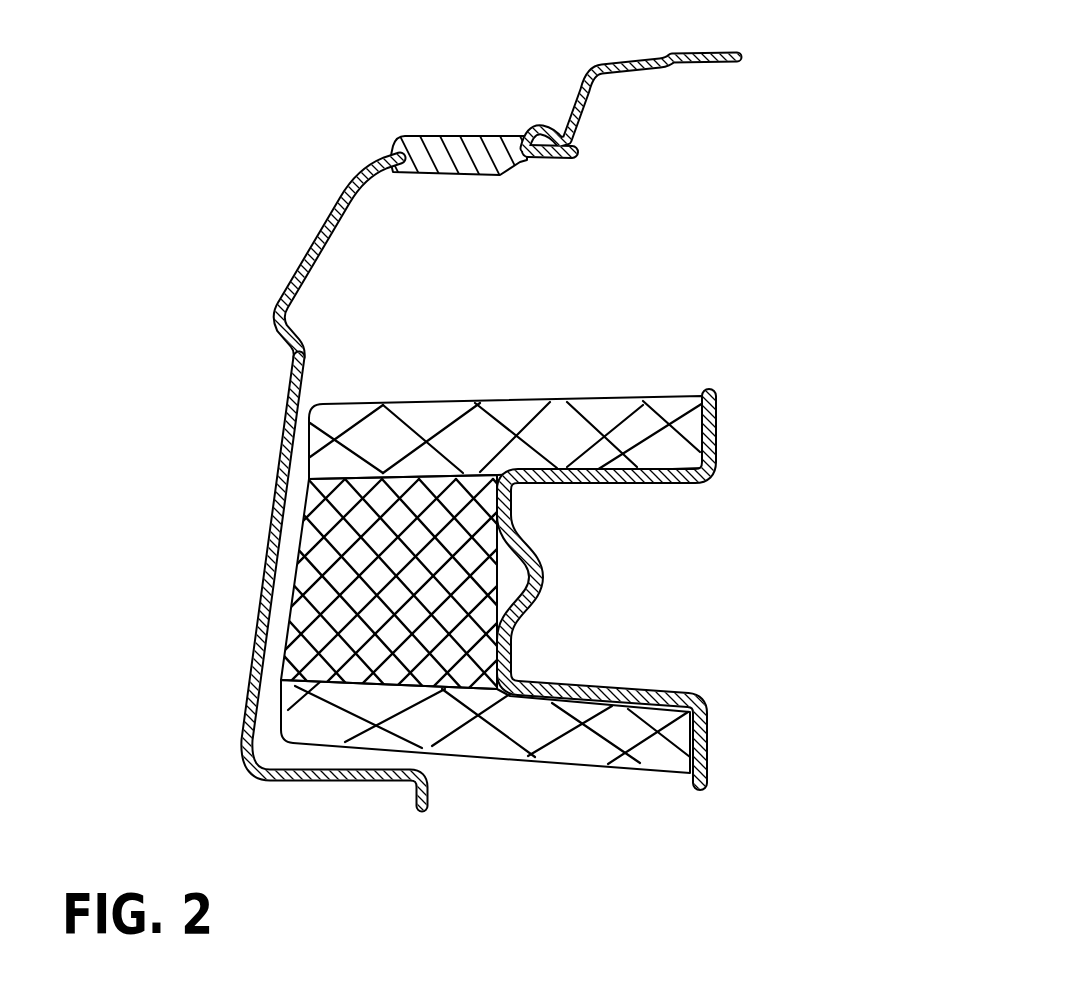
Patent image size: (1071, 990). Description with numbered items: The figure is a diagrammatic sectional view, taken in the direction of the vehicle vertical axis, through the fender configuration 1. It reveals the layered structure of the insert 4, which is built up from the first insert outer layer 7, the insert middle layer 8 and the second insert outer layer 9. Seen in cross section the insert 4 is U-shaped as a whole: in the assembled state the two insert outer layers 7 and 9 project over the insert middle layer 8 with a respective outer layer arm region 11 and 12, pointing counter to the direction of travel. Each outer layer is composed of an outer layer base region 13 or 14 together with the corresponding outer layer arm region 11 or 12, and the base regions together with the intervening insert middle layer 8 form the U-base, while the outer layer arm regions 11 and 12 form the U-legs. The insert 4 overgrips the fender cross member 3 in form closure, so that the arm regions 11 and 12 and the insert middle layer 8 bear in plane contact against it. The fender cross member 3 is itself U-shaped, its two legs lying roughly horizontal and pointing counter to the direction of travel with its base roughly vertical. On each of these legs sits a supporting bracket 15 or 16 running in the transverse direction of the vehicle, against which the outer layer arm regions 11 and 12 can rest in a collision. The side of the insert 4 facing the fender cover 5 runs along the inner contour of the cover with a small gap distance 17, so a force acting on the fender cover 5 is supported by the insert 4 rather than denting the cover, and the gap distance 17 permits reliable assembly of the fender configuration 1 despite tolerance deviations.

The fender configuration 1 is at (464, 410).
The fender cross member 3 is at (669, 591).
The insert 4 is at (468, 557).
The fender cover 5 is at (303, 258).
The first insert outer layer 7 is at (492, 738).
The insert middle layer 8 is at (322, 597).
The second insert outer layer 9 is at (522, 422).
The outer layer arm region 11 is at (660, 754).
The outer layer arm region 12 is at (643, 417).
The outer layer base region 13 is at (353, 715).
The outer layer base region 14 is at (385, 435).
The supporting bracket 15 is at (698, 757).
The supporting bracket 16 is at (710, 415).
The gap distance 17 is at (280, 478).